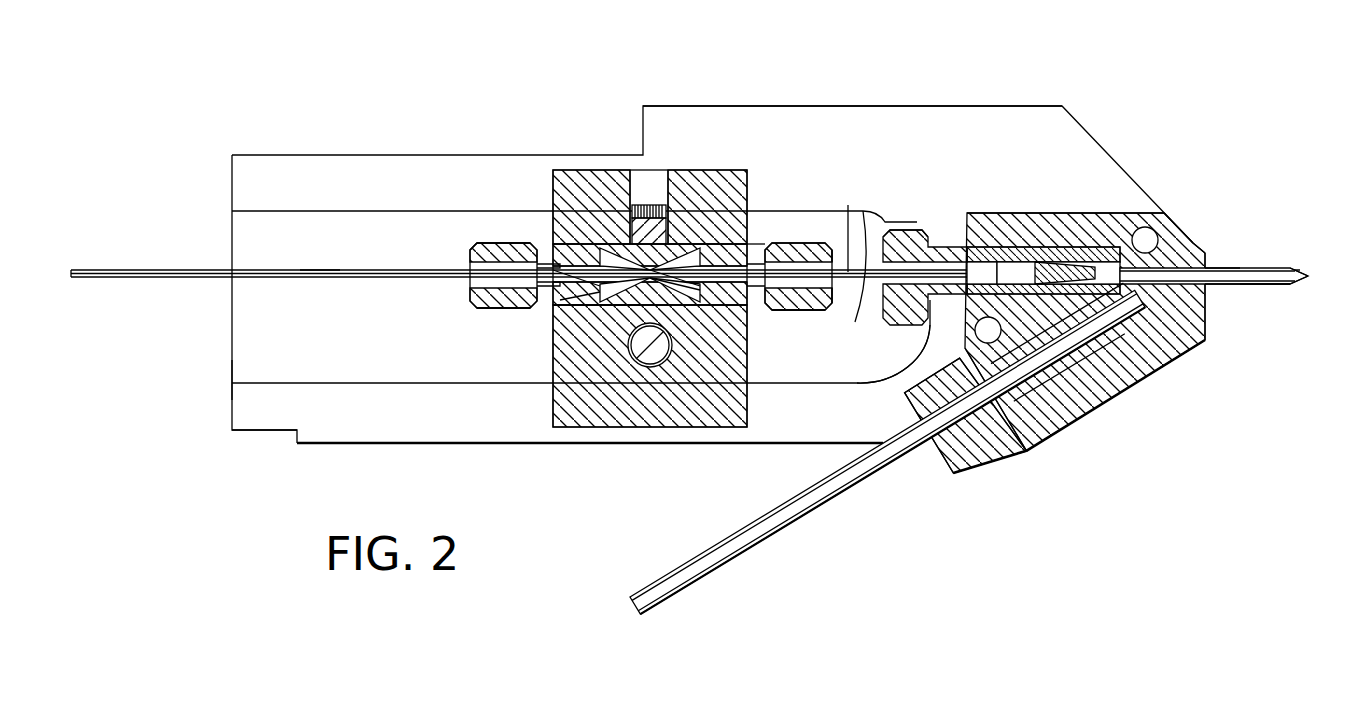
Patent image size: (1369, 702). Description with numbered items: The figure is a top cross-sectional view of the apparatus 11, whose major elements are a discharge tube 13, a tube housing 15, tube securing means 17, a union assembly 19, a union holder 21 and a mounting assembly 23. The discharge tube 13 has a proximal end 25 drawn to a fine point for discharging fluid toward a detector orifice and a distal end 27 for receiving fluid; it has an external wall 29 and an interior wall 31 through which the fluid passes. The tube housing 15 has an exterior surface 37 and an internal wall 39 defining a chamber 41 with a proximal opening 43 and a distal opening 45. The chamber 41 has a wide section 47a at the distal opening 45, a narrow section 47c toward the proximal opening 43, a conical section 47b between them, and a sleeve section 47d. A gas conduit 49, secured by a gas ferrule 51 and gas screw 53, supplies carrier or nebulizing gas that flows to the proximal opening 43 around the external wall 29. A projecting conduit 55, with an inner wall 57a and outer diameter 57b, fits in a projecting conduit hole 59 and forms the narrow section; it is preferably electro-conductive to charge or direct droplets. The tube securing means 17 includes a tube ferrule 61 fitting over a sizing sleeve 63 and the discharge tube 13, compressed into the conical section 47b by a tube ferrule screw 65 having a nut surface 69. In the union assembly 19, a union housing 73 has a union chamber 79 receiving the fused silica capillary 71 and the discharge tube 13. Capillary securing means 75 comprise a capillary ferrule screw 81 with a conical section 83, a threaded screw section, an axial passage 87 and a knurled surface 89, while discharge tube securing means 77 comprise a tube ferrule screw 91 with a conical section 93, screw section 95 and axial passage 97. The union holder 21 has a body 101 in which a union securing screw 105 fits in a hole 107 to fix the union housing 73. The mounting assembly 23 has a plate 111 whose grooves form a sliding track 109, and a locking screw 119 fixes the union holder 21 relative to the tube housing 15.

The apparatus 11 is at (760, 84).
The discharge tube 13 is at (868, 212).
The tube housing 15 is at (1158, 236).
The tube securing means 17 is at (938, 247).
The union assembly 19 is at (680, 240).
The union holder 21 is at (586, 168).
The mounting assembly 23 is at (470, 444).
The proximal end 25 is at (1304, 275).
The distal end 27 is at (664, 290).
The external wall 29 is at (857, 272).
The interior wall 31 is at (850, 211).
The exterior surface 37 is at (1125, 213).
The internal wall 39 is at (1165, 228).
The chamber 41 is at (1178, 256).
The proximal opening 43 is at (1292, 284).
The distal opening 45 is at (932, 326).
The wide section 47a is at (978, 214).
The conical section 47b is at (1092, 332).
The narrow section 47c is at (1180, 352).
The sleeve section 47d is at (1040, 214).
The gas conduit 49 is at (848, 497).
The gas ferrule 51 is at (1080, 382).
The gas screw 53 is at (958, 464).
The projecting conduit 55 is at (1246, 285).
The inner wall 57a is at (1262, 268).
The outer diameter 57b is at (1212, 285).
The projecting conduit hole 59 is at (1210, 269).
The tube ferrule 61 is at (1060, 378).
The sizing sleeve 63 is at (1100, 266).
The tube ferrule screw 65 is at (923, 230).
The nut surface 69 is at (905, 230).
The fused silica capillary 71 is at (211, 268).
The union housing 73 is at (592, 300).
The capillary securing means 75 is at (518, 241).
The discharge tube securing means 77 is at (798, 243).
The union chamber 79 is at (645, 203).
The capillary ferrule screw 81 is at (492, 309).
The conical section 83 is at (626, 246).
The axial passage 87 is at (475, 251).
The knurled surface 89 is at (480, 241).
The tube ferrule screw 91 is at (800, 311).
The conical section 93 is at (682, 265).
The screw section 95 is at (737, 245).
The axial passage 97 is at (840, 262).
The body 101 is at (602, 320).
The union securing screw 105 is at (640, 178).
The hole 107 is at (658, 176).
The sliding track 109 is at (232, 375).
The plate 111 is at (262, 430).
The locking screw 119 is at (650, 368).